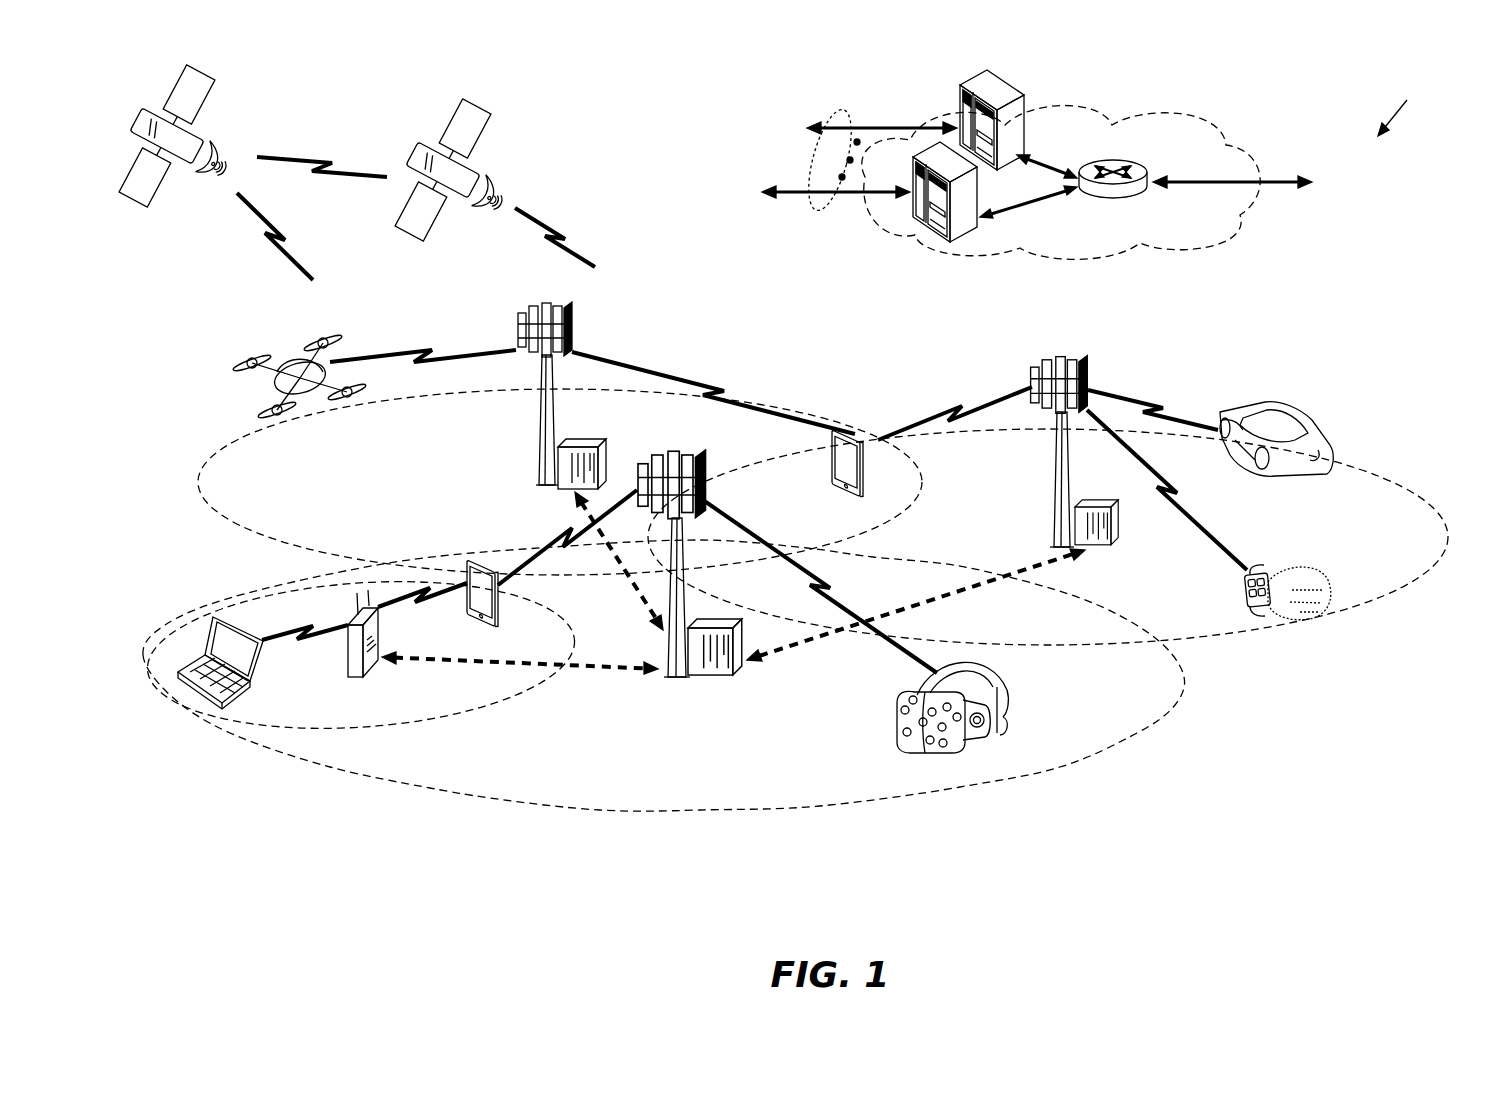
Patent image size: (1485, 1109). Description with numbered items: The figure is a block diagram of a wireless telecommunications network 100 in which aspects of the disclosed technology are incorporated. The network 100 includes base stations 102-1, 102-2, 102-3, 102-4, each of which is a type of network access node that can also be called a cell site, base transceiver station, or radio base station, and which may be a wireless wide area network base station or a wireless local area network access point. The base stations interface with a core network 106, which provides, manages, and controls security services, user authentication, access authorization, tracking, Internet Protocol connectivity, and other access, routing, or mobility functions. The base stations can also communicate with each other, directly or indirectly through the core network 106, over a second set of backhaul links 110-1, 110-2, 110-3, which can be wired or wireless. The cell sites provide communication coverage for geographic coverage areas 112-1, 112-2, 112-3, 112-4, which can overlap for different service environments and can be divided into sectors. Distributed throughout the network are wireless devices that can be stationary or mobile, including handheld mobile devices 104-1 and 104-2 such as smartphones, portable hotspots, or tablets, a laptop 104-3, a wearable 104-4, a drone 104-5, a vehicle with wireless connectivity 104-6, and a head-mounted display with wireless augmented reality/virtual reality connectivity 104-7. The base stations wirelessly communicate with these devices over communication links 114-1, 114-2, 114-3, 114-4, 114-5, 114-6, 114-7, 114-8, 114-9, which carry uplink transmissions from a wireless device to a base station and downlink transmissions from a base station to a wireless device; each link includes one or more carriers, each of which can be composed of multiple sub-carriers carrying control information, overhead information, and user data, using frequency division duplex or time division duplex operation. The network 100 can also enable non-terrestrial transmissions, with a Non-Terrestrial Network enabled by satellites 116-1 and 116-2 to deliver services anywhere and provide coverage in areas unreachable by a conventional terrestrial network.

The wireless telecommunications network 100 is at (1404, 110).
The base station 102-1 is at (675, 679).
The base station 102-2 is at (540, 434).
The base station 102-3 is at (1055, 458).
The base station 102-4 is at (347, 672).
The handheld mobile device 104-1 is at (500, 605).
The handheld mobile device 104-2 is at (830, 470).
The laptop 104-3 is at (197, 705).
The wearable 104-4 is at (1258, 566).
The drone 104-5 is at (310, 400).
The vehicle with wireless connectivity 104-6 is at (1300, 414).
The head-mounted display 104-7 is at (1008, 690).
The core network 106 is at (1148, 246).
The backhaul link 110-1 is at (415, 663).
The backhaul link 110-2 is at (978, 592).
The backhaul link 110-3 is at (637, 592).
The geographic coverage area 112-1 is at (605, 808).
The geographic coverage area 112-2 is at (481, 721).
The geographic coverage area 112-3 is at (248, 525).
The geographic coverage area 112-4 is at (1365, 470).
The communication link 114-1 is at (837, 590).
The communication link 114-2 is at (563, 533).
The communication link 114-3 is at (276, 638).
The communication link 114-4 is at (418, 603).
The communication link 114-5 is at (432, 352).
The communication link 114-6 is at (710, 390).
The communication link 114-7 is at (950, 410).
The communication link 114-8 is at (1182, 503).
The communication link 114-9 is at (1157, 410).
The satellite 116-1 is at (213, 152).
The satellite 116-2 is at (491, 192).